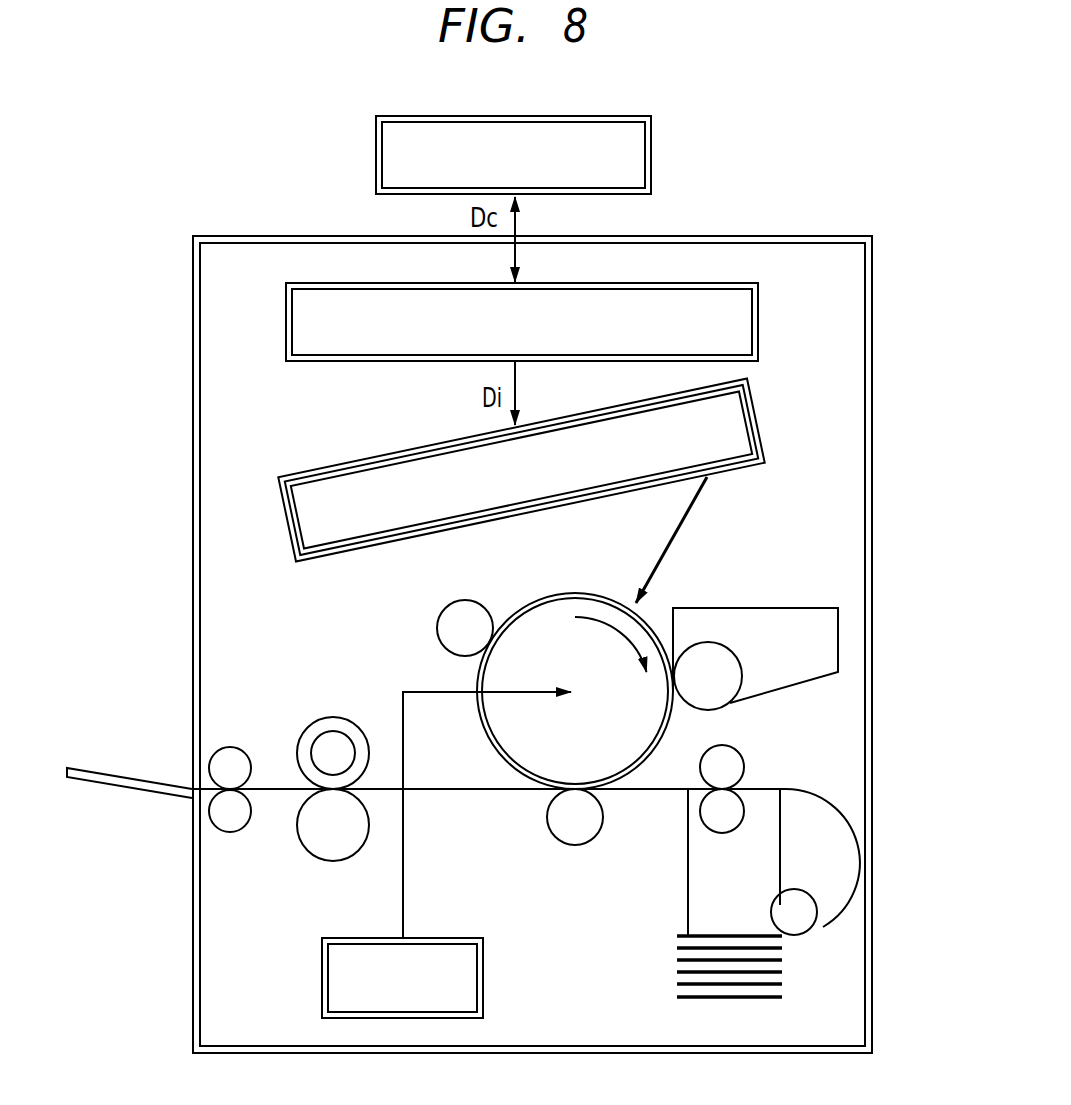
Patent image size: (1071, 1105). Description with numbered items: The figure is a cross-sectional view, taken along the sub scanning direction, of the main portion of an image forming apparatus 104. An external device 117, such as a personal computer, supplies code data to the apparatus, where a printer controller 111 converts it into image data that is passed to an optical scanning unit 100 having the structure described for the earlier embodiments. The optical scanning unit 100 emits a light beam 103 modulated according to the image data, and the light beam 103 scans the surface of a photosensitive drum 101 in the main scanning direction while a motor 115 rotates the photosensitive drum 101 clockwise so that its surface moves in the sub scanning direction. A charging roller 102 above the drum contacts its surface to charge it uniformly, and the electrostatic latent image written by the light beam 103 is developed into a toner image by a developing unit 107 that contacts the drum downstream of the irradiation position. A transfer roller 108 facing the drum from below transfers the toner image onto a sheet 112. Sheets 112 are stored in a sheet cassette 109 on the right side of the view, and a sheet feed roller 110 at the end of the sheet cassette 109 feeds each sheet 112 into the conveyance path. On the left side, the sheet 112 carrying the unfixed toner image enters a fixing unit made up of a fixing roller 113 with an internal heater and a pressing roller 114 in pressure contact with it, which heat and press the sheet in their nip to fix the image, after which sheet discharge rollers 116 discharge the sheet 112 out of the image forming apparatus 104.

The optical scanning unit 100 is at (372, 457).
The photosensitive drum 101 is at (655, 718).
The charging roller 102 is at (463, 608).
The light beam 103 is at (680, 525).
The image forming apparatus 104 is at (827, 222).
The developing unit 107 is at (838, 622).
The transfer roller 108 is at (583, 838).
The sheet cassette 109 is at (666, 975).
The sheet feed roller 110 is at (792, 910).
The printer controller 111 is at (758, 306).
The sheet 112 is at (452, 790).
The fixing roller 113 is at (326, 745).
The pressing roller 114 is at (310, 835).
The motor 115 is at (322, 980).
The sheet discharge rollers 116 is at (241, 757).
The external device 117 is at (651, 133).